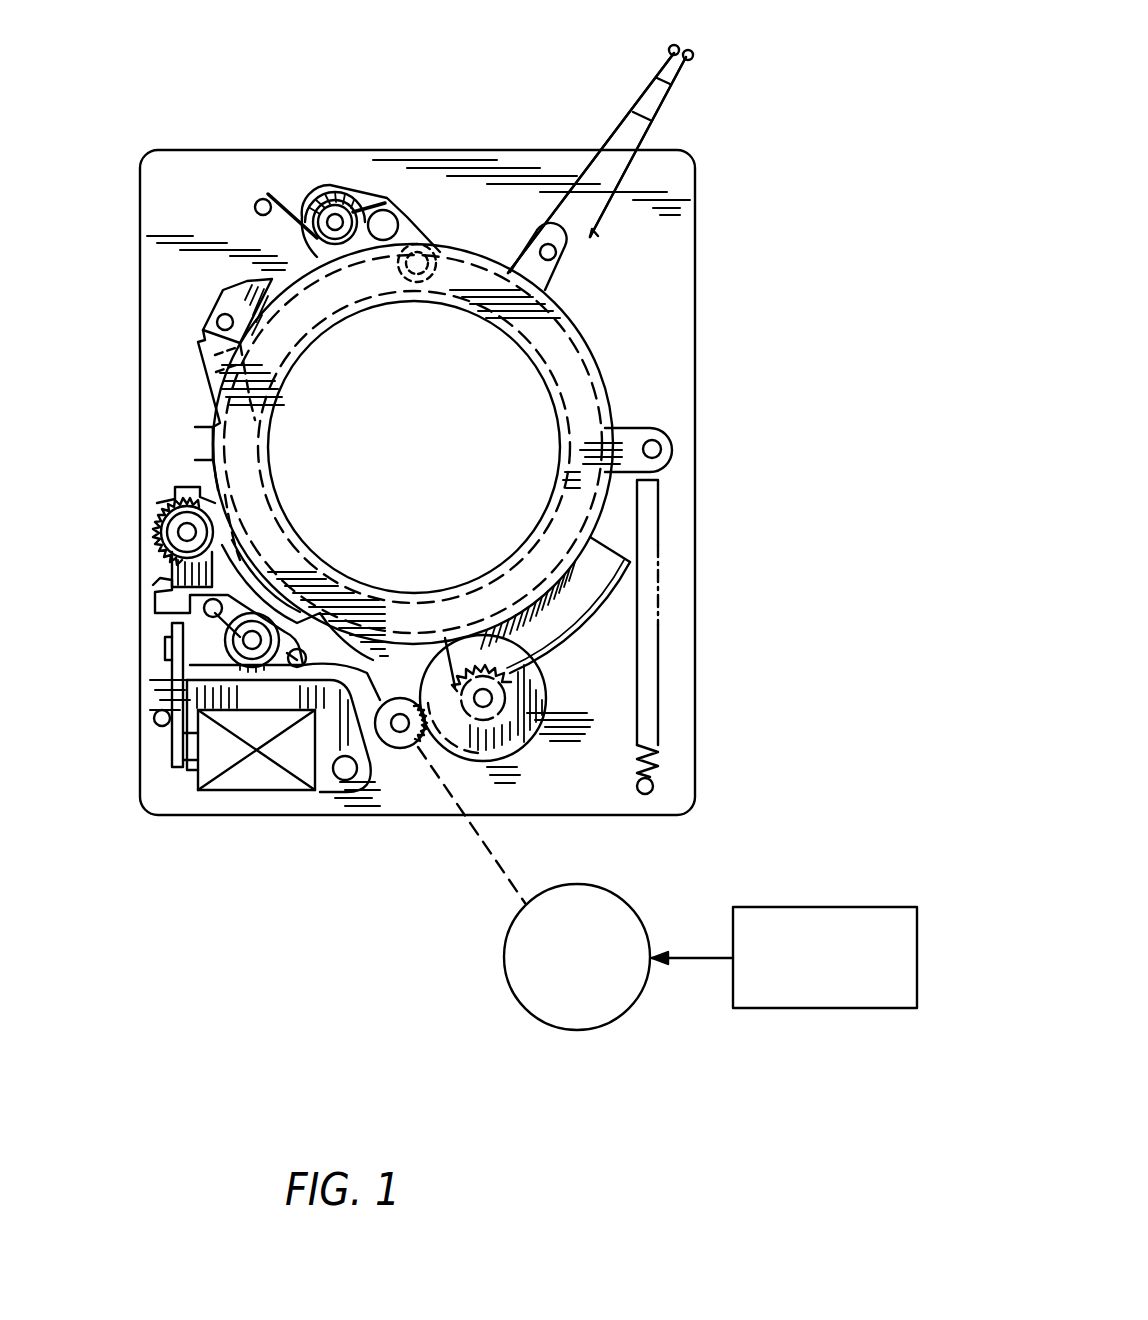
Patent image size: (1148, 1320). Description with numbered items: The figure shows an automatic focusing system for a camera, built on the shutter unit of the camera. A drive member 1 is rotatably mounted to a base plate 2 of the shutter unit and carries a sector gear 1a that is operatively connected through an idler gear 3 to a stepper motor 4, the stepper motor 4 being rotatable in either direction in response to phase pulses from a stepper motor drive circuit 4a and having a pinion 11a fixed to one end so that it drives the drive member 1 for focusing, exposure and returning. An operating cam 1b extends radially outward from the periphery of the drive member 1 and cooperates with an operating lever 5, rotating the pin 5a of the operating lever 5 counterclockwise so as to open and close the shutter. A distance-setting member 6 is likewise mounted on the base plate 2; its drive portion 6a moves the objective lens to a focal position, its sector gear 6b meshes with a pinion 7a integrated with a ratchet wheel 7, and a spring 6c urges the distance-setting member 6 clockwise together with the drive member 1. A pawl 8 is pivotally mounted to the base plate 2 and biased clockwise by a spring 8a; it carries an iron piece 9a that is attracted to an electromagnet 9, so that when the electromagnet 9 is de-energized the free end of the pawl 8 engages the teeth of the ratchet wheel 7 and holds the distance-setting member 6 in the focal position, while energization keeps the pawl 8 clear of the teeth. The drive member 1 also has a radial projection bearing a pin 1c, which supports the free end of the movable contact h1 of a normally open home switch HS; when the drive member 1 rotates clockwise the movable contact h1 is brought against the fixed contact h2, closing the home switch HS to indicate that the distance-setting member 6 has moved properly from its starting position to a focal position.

The drive member 1 is at (587, 362).
The sector gear 1a is at (597, 597).
The operating cam 1b is at (230, 283).
The pin 1c is at (563, 267).
The base plate 2 is at (696, 328).
The idler gear 3 is at (547, 740).
The stepper motor 4 is at (593, 1020).
The stepper motor drive circuit 4a is at (815, 1003).
The operating lever 5 is at (362, 183).
The pin 5a is at (397, 222).
The distance-setting member 6 is at (232, 428).
The drive portion 6a is at (195, 443).
The sector gear 6b is at (257, 573).
The spring 6c is at (655, 512).
The ratchet wheel 7 is at (155, 513).
The pinion 7a is at (170, 560).
The pawl 8 is at (160, 602).
The spring 8a is at (315, 663).
The electromagnet 9 is at (270, 790).
The iron piece 9a is at (167, 695).
The pinion 11a is at (407, 747).
The home switch HS is at (658, 100).
The movable contact h1 is at (562, 208).
The fixed contact h2 is at (607, 203).